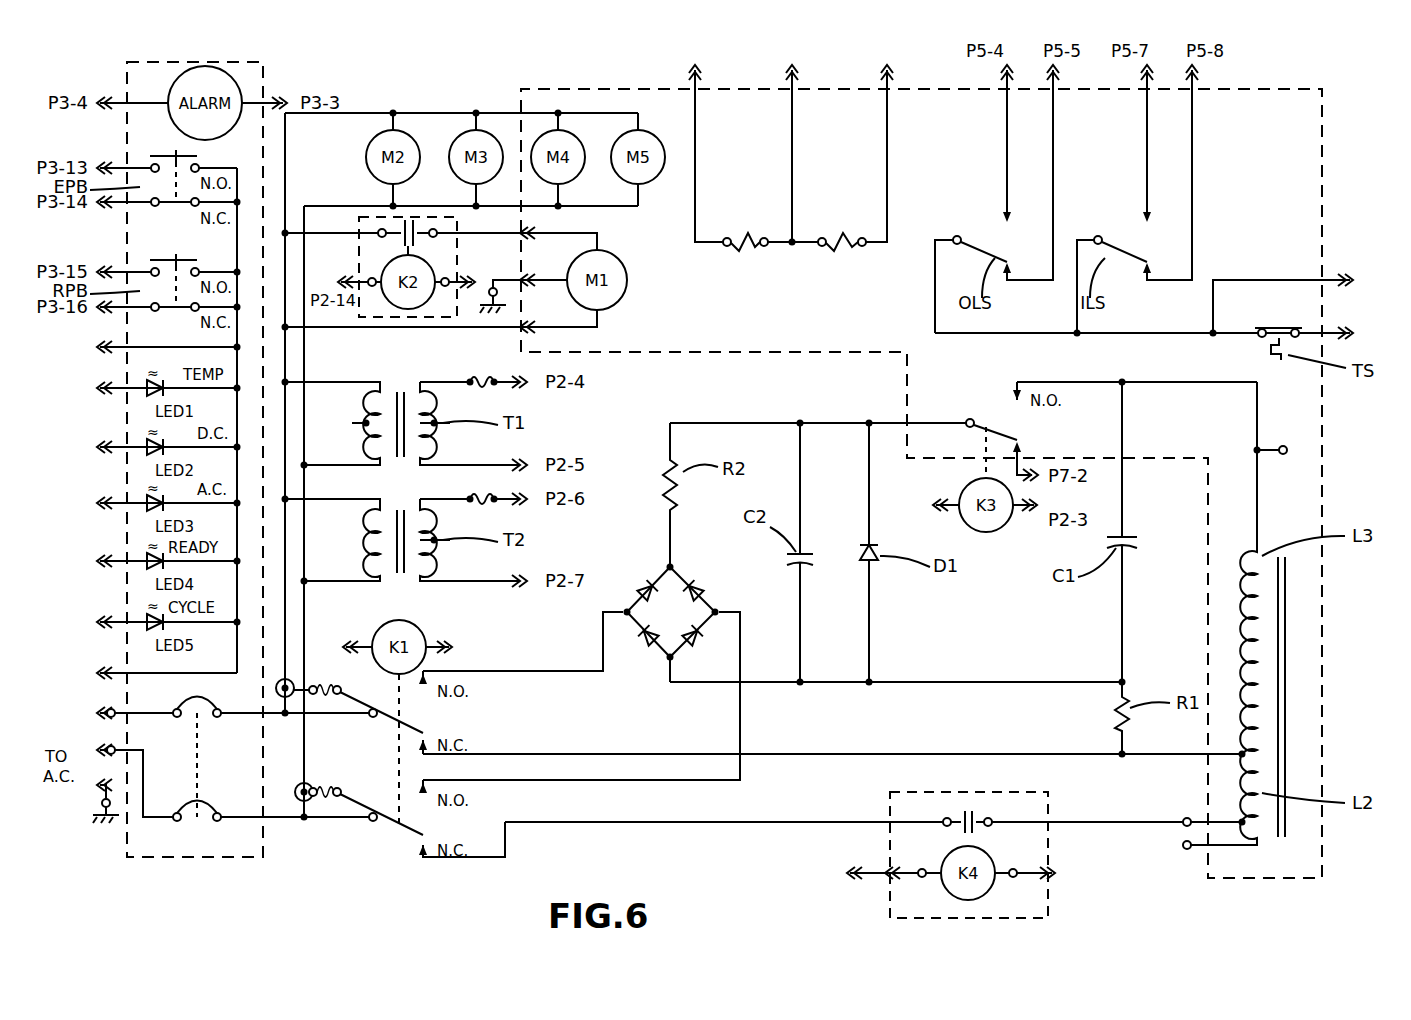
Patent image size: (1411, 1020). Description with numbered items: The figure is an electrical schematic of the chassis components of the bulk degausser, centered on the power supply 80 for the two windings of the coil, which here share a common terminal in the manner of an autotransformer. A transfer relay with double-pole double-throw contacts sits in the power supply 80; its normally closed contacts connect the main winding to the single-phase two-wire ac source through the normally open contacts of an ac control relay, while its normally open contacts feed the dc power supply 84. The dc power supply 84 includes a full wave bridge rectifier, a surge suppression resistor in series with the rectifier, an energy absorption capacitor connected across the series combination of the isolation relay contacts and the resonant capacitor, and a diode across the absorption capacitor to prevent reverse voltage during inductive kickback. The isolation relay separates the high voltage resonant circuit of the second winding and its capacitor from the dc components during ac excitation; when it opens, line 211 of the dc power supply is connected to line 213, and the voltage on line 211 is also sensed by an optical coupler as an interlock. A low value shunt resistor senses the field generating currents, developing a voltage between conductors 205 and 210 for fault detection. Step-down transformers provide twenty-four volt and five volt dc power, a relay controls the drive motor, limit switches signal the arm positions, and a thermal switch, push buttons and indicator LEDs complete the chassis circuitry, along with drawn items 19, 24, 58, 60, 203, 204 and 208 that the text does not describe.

The control line to relay K3 19 is at (935, 497).
The connection line to P2-3 24 is at (1042, 499).
The insert switch 58 is at (752, 238).
The extract switch 60 is at (846, 238).
The power supply 80 is at (548, 644).
The dc power supply 84 is at (712, 600).
The conductor line 203 is at (605, 823).
The conductor line 204 is at (595, 780).
The conductor 205 is at (580, 753).
The conductor line 208 is at (1090, 382).
The conductor 210 is at (925, 682).
The line 211 is at (838, 423).
The line 213 is at (1025, 455).